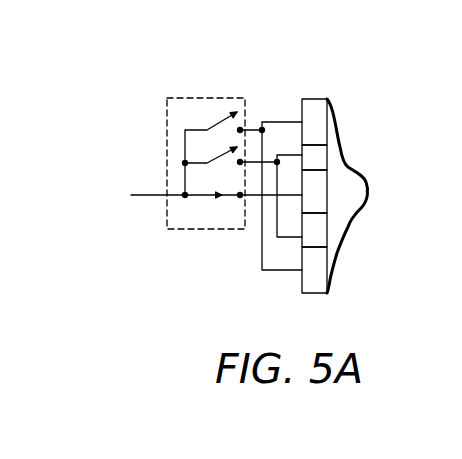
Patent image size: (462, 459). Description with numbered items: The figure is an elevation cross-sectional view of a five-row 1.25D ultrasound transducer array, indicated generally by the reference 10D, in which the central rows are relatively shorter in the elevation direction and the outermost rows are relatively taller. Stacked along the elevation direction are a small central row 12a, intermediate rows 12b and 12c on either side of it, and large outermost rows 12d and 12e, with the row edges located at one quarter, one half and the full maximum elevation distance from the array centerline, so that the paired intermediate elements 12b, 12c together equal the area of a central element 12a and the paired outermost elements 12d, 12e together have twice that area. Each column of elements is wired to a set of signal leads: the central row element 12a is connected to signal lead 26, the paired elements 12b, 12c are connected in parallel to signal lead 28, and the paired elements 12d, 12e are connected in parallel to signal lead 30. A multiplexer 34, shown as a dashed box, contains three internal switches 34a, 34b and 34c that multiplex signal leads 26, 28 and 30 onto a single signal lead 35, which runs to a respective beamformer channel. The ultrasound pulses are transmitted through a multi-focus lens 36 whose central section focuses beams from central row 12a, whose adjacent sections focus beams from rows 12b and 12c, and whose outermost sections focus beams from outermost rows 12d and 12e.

The indicator device 10D is at (350, 78).
The central row element 12a is at (313, 203).
The intermediate row element 12b is at (317, 237).
The intermediate row element 12c is at (319, 158).
The outermost row element 12d is at (312, 290).
The outermost row element 12e is at (312, 104).
The signal lead 26 is at (272, 198).
The signal lead 28 is at (260, 167).
The signal lead 30 is at (250, 124).
The multiplexer 34 is at (192, 97).
The switch 34a is at (205, 198).
The switch 34b is at (203, 160).
The switch 34c is at (205, 125).
The signal lead 35 is at (143, 197).
The multi-focus lens 36 is at (368, 178).